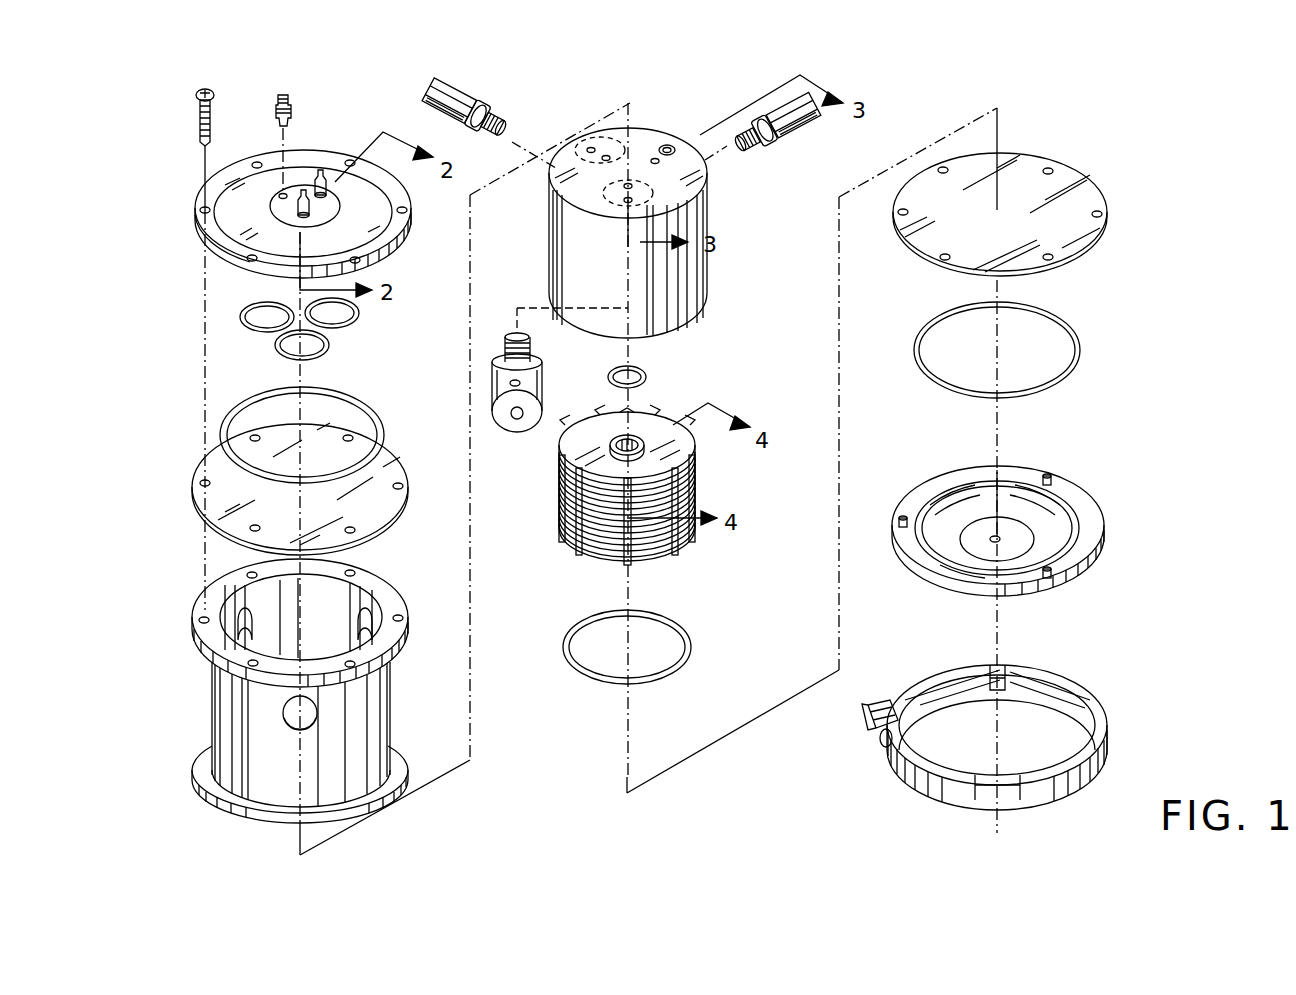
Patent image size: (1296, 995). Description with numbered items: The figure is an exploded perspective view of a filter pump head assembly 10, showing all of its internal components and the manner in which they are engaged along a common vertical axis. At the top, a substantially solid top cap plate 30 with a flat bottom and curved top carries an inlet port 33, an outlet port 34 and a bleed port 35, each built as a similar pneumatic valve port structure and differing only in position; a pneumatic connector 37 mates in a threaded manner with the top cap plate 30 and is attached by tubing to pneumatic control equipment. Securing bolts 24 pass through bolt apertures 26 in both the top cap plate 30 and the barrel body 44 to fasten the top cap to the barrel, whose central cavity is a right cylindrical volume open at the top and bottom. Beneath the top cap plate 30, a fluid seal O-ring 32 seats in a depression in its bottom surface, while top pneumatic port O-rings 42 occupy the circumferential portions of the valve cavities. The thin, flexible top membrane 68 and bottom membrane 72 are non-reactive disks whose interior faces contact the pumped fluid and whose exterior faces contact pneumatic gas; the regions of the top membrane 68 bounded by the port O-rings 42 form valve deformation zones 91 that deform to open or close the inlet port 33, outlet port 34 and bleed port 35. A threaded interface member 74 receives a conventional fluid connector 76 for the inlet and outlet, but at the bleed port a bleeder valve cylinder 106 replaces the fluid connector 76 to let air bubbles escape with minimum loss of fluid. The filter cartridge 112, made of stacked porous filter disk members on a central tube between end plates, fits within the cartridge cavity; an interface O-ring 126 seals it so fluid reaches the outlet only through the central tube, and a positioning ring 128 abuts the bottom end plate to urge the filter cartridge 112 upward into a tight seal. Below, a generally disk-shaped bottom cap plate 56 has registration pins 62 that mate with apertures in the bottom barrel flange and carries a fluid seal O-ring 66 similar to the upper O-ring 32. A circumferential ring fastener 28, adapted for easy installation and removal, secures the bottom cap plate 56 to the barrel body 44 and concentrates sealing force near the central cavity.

The filter head assembly 10 is at (1216, 536).
The securing bolts 24 is at (212, 112).
The bolt apertures 26 is at (253, 258).
The circumferential ring fastener 28 is at (1098, 680).
The top cap plate 30 is at (318, 150).
The fluid seal O-ring 32 is at (372, 408).
The inlet port 33 is at (600, 145).
The outlet port 34 is at (672, 142).
The bleed port 35 is at (660, 192).
The pneumatic connector 37 is at (293, 100).
The top pneumatic port O-ring 42 is at (350, 326).
The barrel body 44 is at (384, 692).
The bottom cap plate 56 is at (1100, 521).
The registration pins 62 is at (1050, 473).
The fluid seal O-ring 66 is at (1068, 330).
The top membrane 68 is at (384, 513).
The bottom membrane 72 is at (1088, 192).
The threaded interface member 74 is at (495, 112).
The fluid connector 76 is at (460, 92).
The valve deformation zones 91 is at (643, 128).
The bleeder valve cylinder 106 is at (502, 368).
The filter cartridge 112 is at (494, 477).
The interface O-ring 126 is at (645, 368).
The positioning ring 128 is at (683, 630).